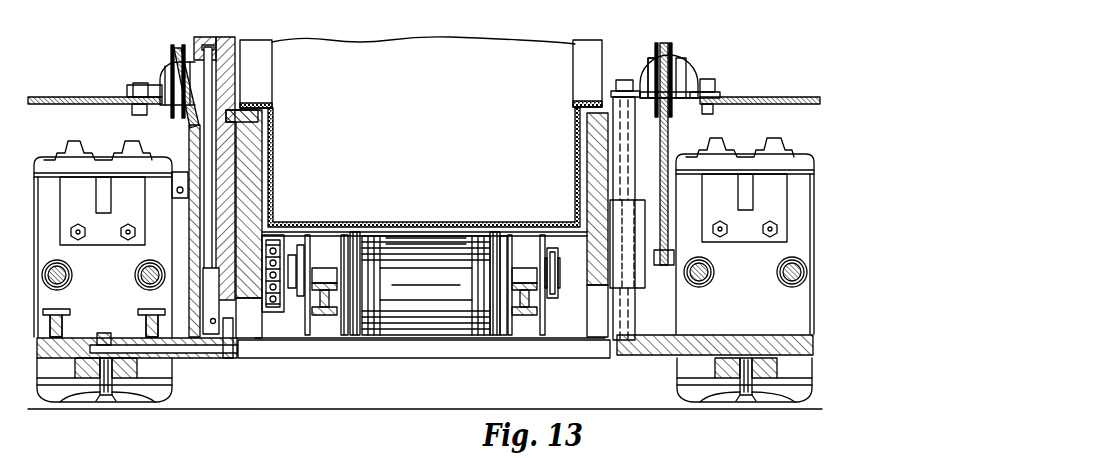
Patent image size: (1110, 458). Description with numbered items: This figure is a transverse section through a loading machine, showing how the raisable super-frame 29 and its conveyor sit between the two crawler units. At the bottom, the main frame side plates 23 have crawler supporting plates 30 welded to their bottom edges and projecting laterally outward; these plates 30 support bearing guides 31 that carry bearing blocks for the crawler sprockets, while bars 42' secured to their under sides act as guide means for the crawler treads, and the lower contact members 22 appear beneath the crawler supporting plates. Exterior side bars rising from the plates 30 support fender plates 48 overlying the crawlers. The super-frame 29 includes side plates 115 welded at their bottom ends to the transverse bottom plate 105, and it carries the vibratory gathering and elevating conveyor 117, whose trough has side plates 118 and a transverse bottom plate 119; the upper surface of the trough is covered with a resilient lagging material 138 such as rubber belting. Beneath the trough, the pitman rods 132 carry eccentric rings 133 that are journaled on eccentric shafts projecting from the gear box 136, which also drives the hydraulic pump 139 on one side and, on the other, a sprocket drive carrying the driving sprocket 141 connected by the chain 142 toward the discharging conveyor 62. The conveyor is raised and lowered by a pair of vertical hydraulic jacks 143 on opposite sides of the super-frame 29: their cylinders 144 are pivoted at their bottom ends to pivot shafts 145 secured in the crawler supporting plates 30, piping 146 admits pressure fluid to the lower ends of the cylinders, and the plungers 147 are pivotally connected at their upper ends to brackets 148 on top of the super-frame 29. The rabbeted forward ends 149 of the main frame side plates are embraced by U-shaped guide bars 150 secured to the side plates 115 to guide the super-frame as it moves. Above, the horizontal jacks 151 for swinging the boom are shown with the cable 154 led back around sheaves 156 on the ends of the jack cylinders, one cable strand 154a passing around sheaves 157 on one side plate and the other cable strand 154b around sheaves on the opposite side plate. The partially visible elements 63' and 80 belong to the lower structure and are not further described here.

The contact clip 22 is at (52, 400).
The main frame side plates 23 is at (628, 162).
The super-frame 29 is at (412, 357).
The crawler supporting plates 30 is at (191, 358).
The bearing guides 31 is at (138, 322).
The bars 42' is at (426, 397).
The fender plates 48 is at (64, 97).
The discharging conveyor 62 is at (459, 450).
The lower member 63' is at (378, 453).
The lower member 80 is at (292, 454).
The transverse bottom plate 105 is at (319, 356).
The side plates 115 is at (251, 143).
The vibratory gathering and elevating conveyor 117 is at (437, 72).
The side plates 118 is at (275, 163).
The transverse bottom plate 119 is at (413, 237).
The pitman rods 132 is at (330, 315).
The eccentric rings 133 is at (331, 232).
The gear box 136 is at (426, 285).
The resilient lagging material 138 is at (397, 232).
The hydraulic pump 139 is at (553, 298).
The driving sprocket 141 is at (291, 240).
The chain 142 is at (267, 311).
The hydraulic jacks 143 is at (188, 146).
The cylinders 144 is at (233, 203).
The pivot shafts 145 is at (229, 358).
The piping 146 is at (216, 323).
The plungers 147 is at (233, 99).
The brackets 148 is at (233, 58).
The forward ends 149 is at (631, 316).
The guide bars 150 is at (617, 212).
The jacks 151 is at (160, 65).
The cable 154 is at (658, 42).
The cable strand 154a is at (669, 133).
The cable strand 154b is at (175, 88).
The sheaves 156 is at (178, 45).
The sheaves 157 is at (650, 265).